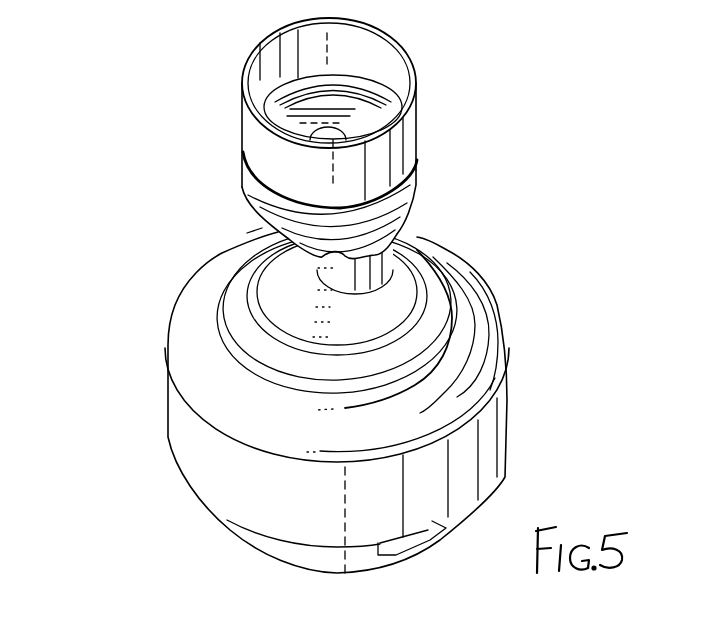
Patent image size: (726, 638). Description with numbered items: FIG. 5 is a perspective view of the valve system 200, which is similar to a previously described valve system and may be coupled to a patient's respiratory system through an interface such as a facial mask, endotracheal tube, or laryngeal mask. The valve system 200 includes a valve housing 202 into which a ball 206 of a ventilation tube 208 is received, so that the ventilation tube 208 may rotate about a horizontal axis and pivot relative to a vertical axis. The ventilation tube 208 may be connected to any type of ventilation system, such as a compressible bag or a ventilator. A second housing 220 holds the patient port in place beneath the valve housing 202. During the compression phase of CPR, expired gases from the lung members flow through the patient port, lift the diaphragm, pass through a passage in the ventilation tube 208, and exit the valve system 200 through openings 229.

The valve system 200 is at (228, 58).
The valve housing 202 is at (493, 397).
The ball 206 is at (397, 278).
The ventilation tube 208 is at (320, 273).
The second housing 220 is at (342, 560).
The openings 229 is at (250, 237).